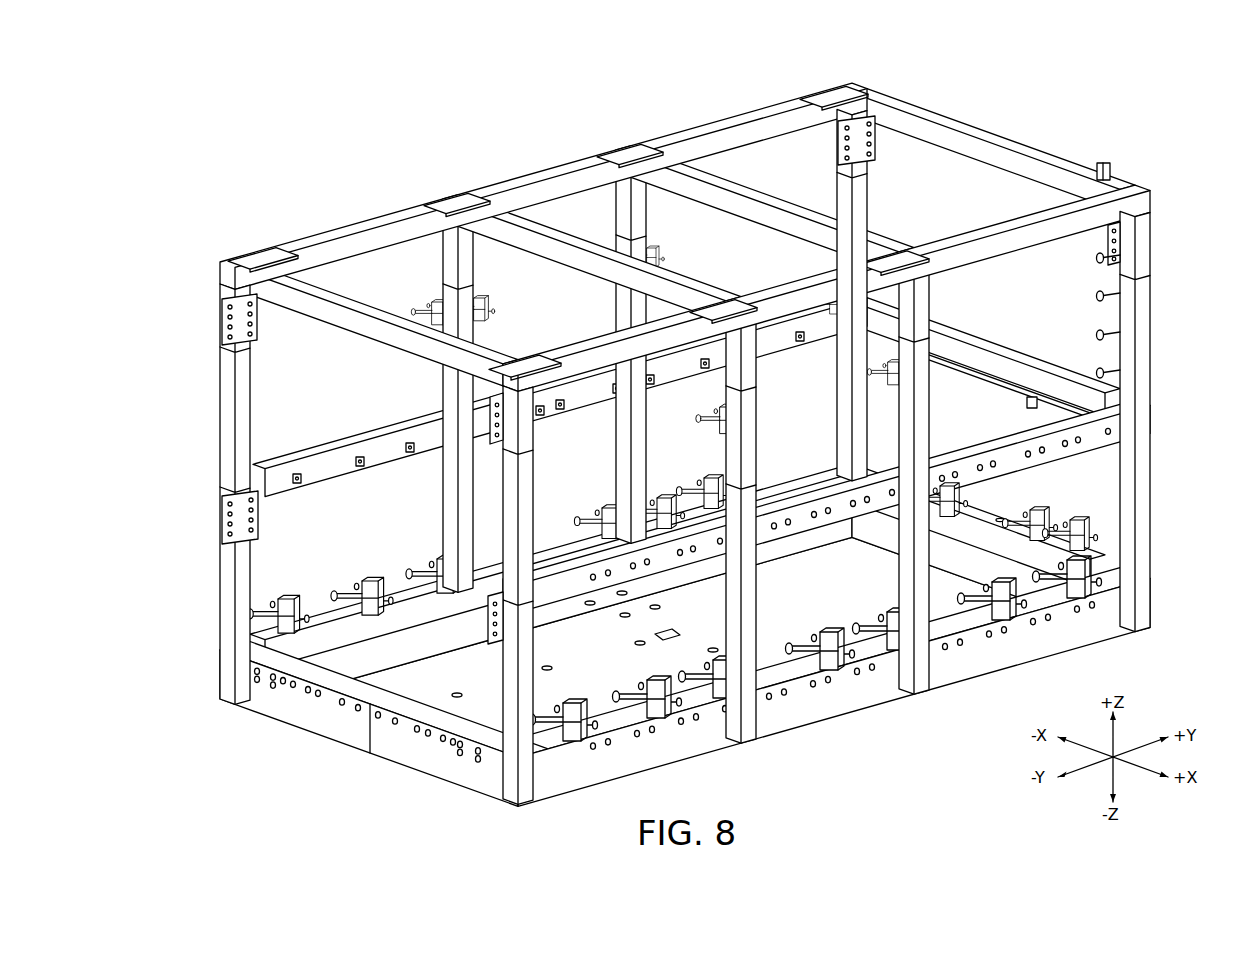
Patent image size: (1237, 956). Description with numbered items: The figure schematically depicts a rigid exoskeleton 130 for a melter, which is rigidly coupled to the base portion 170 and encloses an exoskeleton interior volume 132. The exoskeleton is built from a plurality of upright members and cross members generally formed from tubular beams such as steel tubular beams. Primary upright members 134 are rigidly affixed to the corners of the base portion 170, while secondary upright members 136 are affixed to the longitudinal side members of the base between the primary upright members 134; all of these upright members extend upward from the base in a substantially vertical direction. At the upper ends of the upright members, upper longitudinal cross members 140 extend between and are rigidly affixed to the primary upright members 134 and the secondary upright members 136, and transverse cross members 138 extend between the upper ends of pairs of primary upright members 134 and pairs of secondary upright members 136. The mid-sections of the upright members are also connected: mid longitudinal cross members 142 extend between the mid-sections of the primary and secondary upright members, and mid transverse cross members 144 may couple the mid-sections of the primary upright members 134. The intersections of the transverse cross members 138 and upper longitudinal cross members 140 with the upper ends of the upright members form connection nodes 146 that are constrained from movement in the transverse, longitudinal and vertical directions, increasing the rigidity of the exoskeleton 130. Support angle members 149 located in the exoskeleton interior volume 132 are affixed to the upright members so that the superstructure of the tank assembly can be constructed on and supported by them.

The rigid exoskeleton 130 is at (315, 187).
The exoskeleton interior volume 132 is at (256, 405).
The primary upright member 134 is at (840, 182).
The secondary upright member 136 is at (445, 262).
The transverse cross member 138 is at (313, 322).
The upper longitudinal cross member 140 is at (371, 225).
The mid longitudinal cross member 142 is at (320, 455).
The mid transverse cross member 144 is at (1012, 356).
The connection node 146 is at (247, 252).
The support angle member 149 is at (350, 482).
The base portion 170 is at (383, 772).